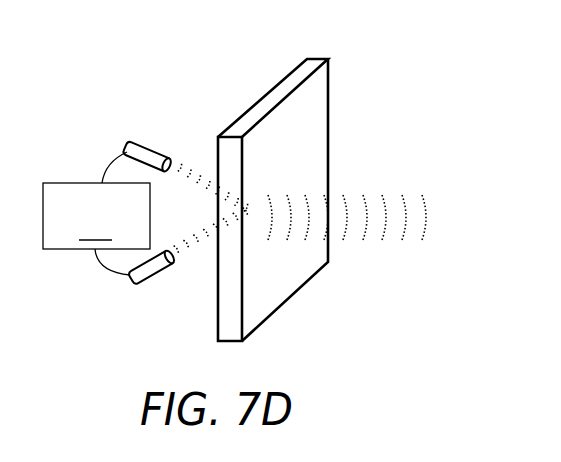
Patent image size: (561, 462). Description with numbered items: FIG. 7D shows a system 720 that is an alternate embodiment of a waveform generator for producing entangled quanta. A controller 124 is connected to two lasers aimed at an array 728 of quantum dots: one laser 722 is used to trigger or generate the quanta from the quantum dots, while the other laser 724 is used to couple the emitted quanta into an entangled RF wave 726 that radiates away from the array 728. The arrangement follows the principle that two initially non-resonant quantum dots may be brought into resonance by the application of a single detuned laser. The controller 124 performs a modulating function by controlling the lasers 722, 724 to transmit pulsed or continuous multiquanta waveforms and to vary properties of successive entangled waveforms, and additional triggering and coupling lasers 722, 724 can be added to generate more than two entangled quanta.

The system 720 is at (138, 85).
The laser 722 is at (145, 142).
The laser 724 is at (152, 283).
The entangled RF wave 726 is at (358, 192).
The array of quantum dots 728 is at (313, 64).
The controller 124 is at (96, 213).